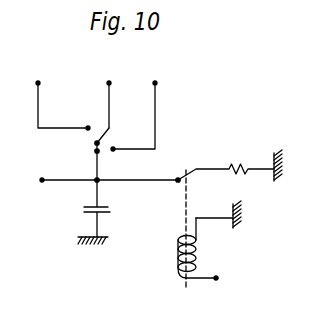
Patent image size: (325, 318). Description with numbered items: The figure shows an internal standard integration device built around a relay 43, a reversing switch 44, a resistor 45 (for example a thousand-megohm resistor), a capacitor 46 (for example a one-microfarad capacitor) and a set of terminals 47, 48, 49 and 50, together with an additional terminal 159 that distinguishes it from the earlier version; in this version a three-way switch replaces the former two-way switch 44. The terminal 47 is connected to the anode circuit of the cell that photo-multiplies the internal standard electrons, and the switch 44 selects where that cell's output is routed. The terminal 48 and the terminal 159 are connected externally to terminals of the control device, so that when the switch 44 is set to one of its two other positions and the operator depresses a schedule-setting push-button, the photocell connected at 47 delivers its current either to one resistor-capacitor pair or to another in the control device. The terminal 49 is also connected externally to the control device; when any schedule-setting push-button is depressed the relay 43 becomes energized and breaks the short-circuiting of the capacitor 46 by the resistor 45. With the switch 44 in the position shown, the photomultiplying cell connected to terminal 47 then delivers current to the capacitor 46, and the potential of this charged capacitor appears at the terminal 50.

The terminal 159 is at (38, 76).
The reversing switch 44 is at (101, 136).
The terminal 47 is at (110, 82).
The terminal 48 is at (156, 82).
The terminal 50 is at (42, 181).
The capacitor 46 is at (109, 209).
The resistor 45 is at (237, 167).
The relay 43 is at (178, 260).
The terminal 49 is at (217, 279).